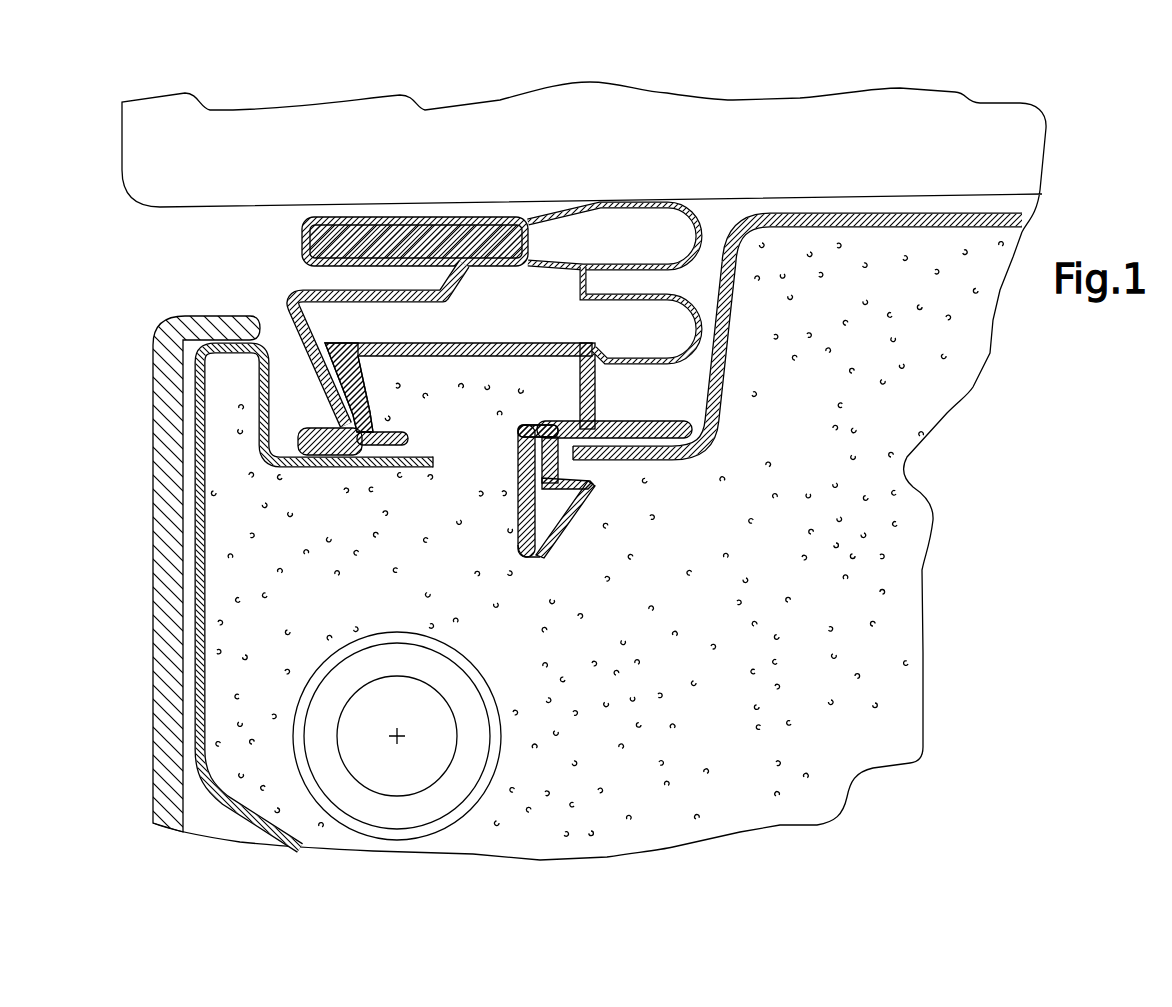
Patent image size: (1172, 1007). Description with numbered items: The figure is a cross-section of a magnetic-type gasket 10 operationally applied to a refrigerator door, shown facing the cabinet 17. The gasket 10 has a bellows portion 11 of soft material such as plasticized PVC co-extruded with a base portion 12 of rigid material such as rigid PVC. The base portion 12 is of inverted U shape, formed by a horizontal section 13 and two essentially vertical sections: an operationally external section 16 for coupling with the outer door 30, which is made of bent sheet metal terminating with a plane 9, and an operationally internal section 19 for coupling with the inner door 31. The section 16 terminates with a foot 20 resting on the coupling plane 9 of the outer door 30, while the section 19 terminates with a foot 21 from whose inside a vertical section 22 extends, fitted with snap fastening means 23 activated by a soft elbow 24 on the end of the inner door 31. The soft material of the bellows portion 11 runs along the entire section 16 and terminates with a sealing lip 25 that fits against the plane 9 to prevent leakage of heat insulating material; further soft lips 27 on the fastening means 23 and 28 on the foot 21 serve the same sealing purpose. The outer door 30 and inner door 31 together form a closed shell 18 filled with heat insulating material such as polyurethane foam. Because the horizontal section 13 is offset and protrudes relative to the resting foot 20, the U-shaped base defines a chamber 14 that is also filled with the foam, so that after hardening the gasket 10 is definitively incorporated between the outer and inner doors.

The plane 9 is at (414, 468).
The gasket 10 is at (220, 245).
The bellows portion 11 is at (297, 298).
The base portion 12 is at (517, 345).
The horizontal section 13 is at (453, 356).
The chamber 14 is at (507, 434).
The external vertical section 16 is at (350, 385).
The cabinet 17 is at (132, 146).
The shell 18 is at (488, 558).
The internal vertical section 19 is at (596, 392).
The foot 20 is at (394, 432).
The foot 21 is at (560, 426).
The vertical section 22 is at (520, 483).
The snap fastening means 23 is at (577, 509).
The elbow 24 is at (548, 552).
The sealing lip 25 is at (345, 460).
The lip 27 is at (620, 440).
The lip 28 is at (693, 458).
The outer door 30 is at (205, 605).
The inner door 31 is at (735, 302).